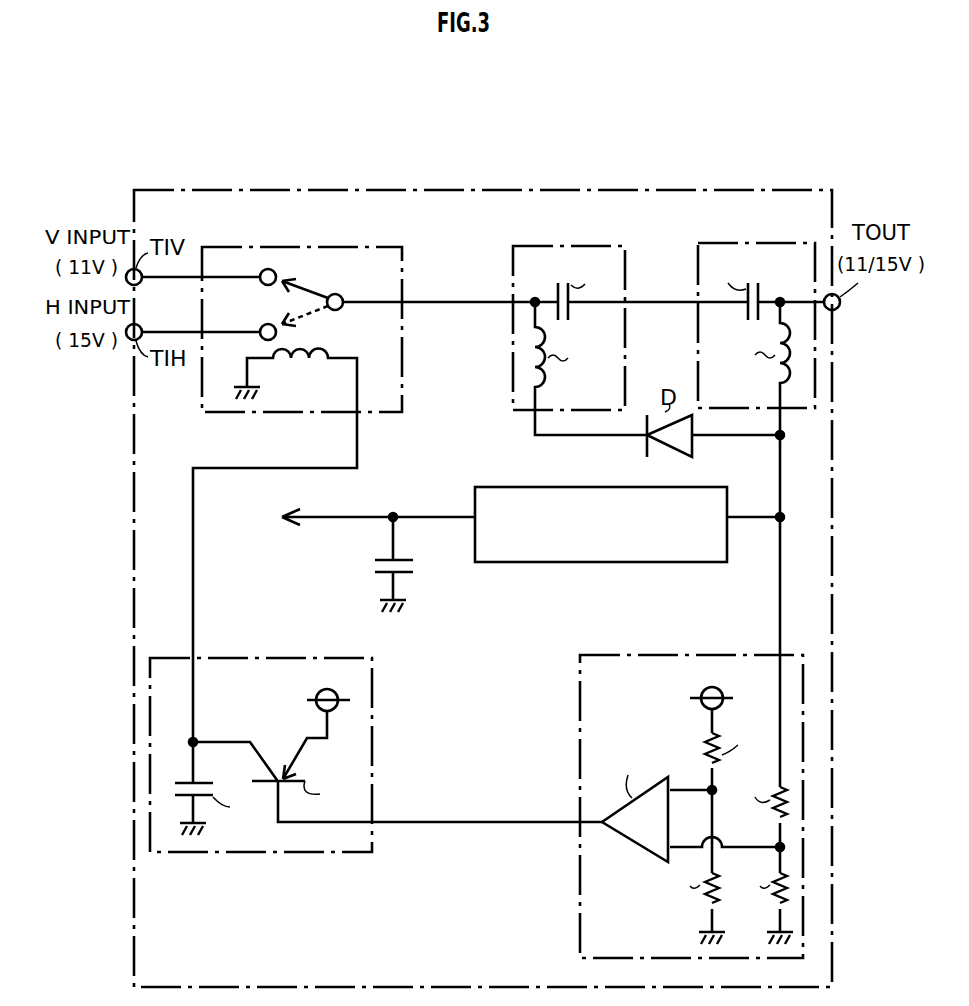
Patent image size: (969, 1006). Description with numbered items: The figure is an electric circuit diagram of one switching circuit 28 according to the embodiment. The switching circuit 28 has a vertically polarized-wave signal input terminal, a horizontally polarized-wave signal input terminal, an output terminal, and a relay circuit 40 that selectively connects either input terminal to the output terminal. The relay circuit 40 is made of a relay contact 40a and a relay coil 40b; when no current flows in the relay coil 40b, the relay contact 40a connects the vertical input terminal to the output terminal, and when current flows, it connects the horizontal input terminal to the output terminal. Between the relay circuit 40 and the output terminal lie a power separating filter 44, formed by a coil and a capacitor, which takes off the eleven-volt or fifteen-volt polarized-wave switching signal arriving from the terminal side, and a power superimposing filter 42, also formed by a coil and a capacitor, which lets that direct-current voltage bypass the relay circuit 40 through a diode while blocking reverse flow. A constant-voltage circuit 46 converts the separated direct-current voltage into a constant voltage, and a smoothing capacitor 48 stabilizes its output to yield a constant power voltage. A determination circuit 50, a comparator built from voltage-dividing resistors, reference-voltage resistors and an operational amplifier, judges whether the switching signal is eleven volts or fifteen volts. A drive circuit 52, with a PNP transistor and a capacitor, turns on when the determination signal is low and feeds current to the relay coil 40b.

The switching circuit 28 is at (730, 188).
The relay circuit 40 is at (297, 472).
The relay contact 40a is at (312, 290).
The relay coil 40b is at (325, 347).
The power superimposing filter 42 is at (543, 240).
The power separating filter 44 is at (728, 242).
The constant-voltage circuit 46 is at (723, 483).
The smoothing capacitor 48 is at (405, 576).
The determination circuit 50 is at (687, 651).
The drive circuit 52 is at (235, 657).